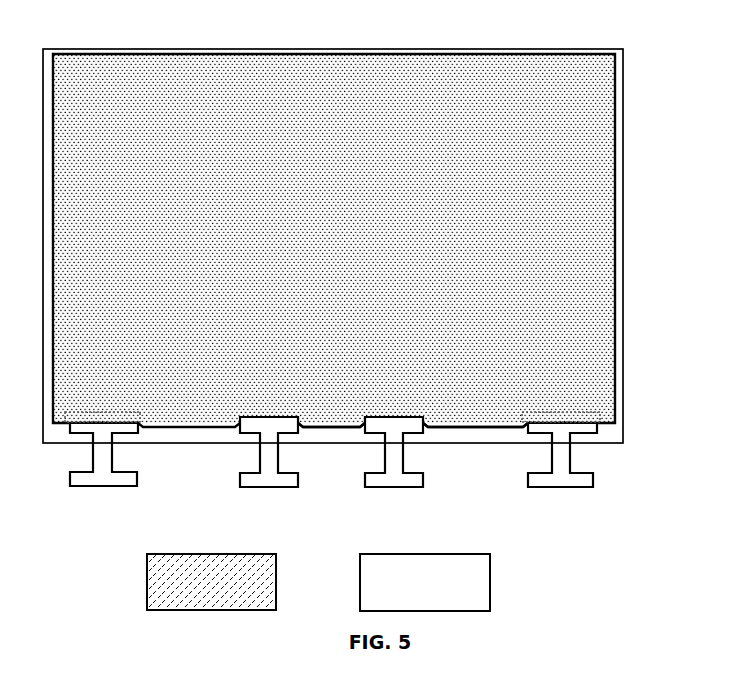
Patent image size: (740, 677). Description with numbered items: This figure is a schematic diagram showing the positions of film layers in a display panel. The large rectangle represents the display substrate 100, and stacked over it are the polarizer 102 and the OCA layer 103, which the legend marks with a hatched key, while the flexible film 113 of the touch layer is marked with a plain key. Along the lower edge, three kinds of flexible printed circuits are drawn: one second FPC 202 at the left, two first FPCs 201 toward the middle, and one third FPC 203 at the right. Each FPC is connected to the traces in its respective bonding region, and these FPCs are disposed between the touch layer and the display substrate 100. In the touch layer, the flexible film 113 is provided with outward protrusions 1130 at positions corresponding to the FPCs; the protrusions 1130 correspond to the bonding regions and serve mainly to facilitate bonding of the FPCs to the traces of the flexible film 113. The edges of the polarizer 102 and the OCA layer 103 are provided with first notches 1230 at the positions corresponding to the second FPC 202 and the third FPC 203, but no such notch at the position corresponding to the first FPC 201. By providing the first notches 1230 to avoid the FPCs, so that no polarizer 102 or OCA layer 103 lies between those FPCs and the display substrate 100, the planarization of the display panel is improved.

The display substrate 100 is at (360, 270).
The first flexible printed circuit 201 is at (272, 467).
The second flexible printed circuit 202 is at (98, 467).
The third flexible printed circuit 203 is at (570, 467).
The outward protrusion 1130 is at (362, 428).
The first notch 1230 is at (141, 425).
The polarizer 102 is at (211, 582).
The OCA layer 103 is at (211, 582).
The flexible film 113 is at (425, 582).